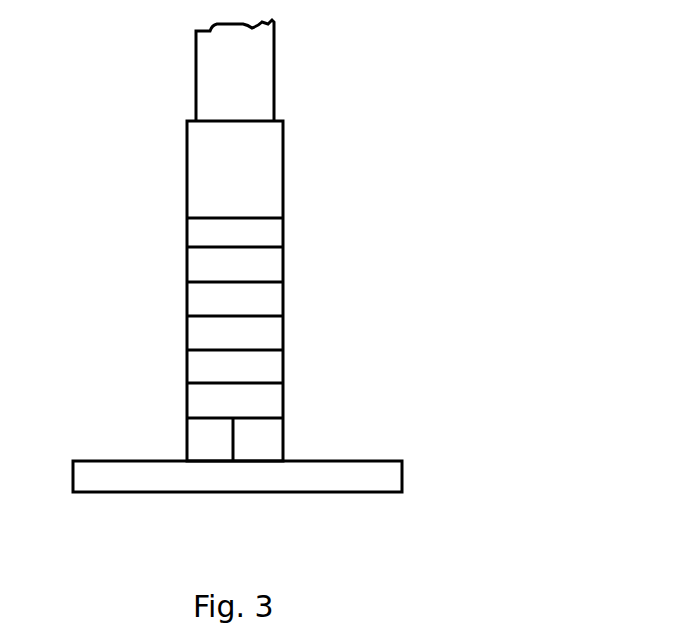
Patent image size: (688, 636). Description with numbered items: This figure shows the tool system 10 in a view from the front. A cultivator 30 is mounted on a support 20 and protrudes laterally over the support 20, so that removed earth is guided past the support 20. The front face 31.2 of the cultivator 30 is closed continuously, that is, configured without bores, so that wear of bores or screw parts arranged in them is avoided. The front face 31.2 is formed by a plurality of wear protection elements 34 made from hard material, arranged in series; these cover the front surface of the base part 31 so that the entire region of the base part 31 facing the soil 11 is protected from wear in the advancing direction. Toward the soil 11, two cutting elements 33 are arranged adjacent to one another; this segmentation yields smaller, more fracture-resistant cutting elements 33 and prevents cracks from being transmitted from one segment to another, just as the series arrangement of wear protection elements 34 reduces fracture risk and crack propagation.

The tool system 10 is at (503, 110).
The support 20 is at (250, 70).
The cultivator 30 is at (262, 143).
The base part 31 is at (262, 195).
The front face 31.2 is at (258, 212).
The wear protection elements 34 is at (260, 333).
The cutting elements 33 is at (252, 439).
The soil 11 is at (345, 472).